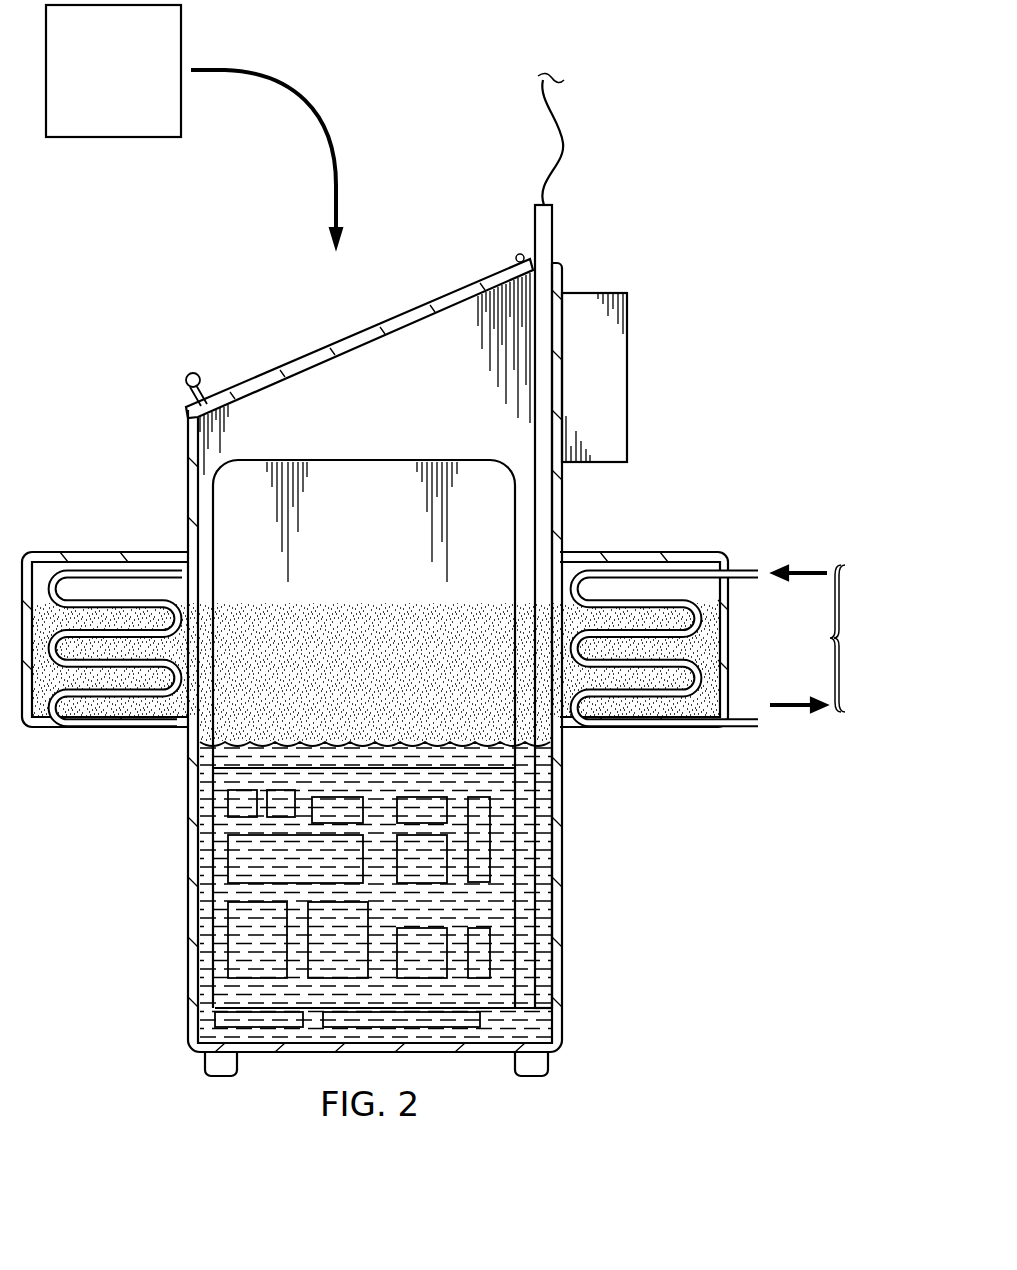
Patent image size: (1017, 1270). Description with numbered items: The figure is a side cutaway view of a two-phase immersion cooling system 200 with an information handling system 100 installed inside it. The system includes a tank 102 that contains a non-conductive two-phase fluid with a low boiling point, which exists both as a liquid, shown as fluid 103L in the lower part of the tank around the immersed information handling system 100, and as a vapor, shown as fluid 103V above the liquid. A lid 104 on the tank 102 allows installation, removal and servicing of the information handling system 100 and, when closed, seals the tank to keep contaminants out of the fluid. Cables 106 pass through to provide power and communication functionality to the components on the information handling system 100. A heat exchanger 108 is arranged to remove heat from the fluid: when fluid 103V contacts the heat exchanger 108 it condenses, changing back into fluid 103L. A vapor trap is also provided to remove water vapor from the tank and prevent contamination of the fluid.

The information handling system 100 is at (447, 762).
The tank 102 is at (632, 369).
The fluid (vapor phase) 103V is at (380, 613).
The fluid (liquid phase) 103L is at (372, 752).
The lid 104 is at (297, 362).
The cables 106 is at (563, 145).
The heat exchanger 108 is at (78, 567).
The two-phase immersion cooling system 200 is at (731, 207).